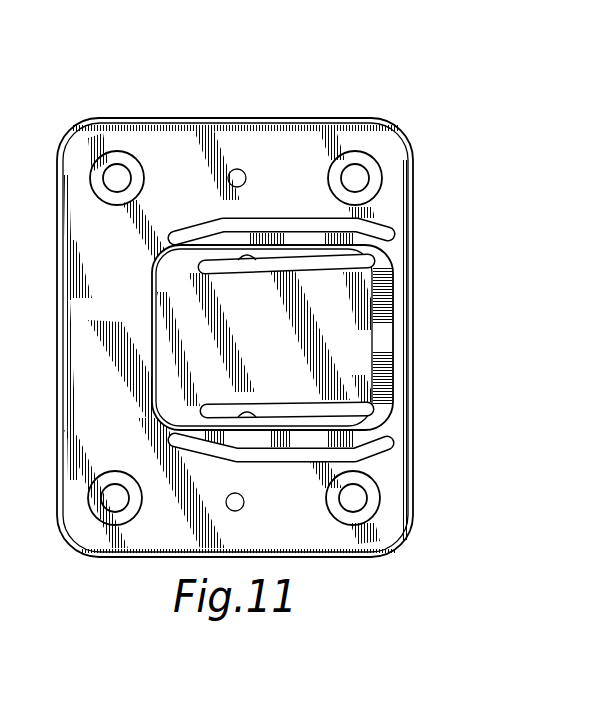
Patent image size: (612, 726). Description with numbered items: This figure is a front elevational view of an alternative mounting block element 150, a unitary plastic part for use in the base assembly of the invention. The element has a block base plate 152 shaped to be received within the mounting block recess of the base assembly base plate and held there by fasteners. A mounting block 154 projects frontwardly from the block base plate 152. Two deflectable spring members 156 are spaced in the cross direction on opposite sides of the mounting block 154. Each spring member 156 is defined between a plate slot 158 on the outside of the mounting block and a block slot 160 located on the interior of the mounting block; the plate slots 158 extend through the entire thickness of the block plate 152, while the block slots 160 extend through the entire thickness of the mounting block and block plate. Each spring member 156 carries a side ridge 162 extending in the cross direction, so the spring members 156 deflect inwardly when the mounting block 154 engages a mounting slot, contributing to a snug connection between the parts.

The mounting block element 150 is at (377, 100).
The block base plate 152 is at (201, 118).
The mounting block 154 is at (152, 318).
The spring member 156 is at (282, 233).
The plate slot 158 is at (310, 217).
The block slot 160 is at (248, 259).
The side ridge 162 is at (356, 190).